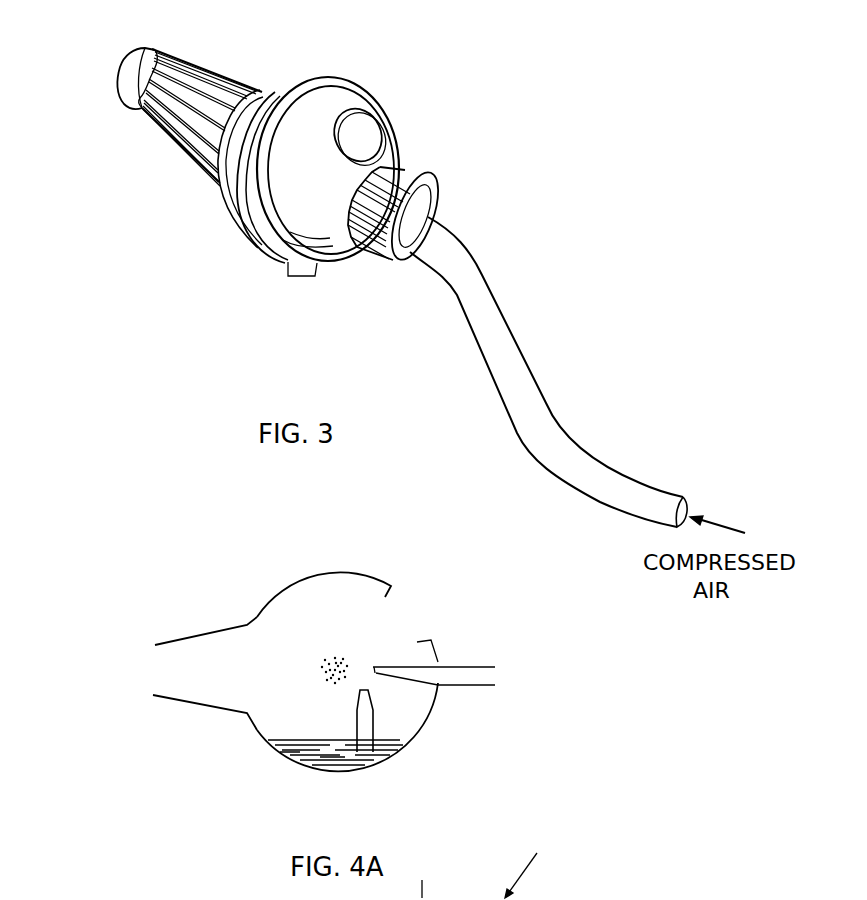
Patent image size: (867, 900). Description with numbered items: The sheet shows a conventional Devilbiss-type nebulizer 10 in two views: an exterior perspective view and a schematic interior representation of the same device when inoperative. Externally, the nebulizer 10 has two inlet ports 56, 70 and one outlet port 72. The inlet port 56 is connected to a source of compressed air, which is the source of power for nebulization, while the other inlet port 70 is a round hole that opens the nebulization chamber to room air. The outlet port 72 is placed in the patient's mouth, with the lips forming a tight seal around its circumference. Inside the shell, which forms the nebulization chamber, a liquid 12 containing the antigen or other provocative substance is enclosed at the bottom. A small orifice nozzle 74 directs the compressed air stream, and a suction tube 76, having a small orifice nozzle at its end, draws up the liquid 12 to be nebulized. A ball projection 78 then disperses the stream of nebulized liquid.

In FIG. 3, the nebulizer 10 is at (220, 192).
In FIG. 4A, the nebulizer 10 is at (257, 732).
In FIG. 4A, the liquid 12 is at (332, 757).
In FIG. 3, the inlet port 56 is at (383, 256).
In FIG. 4A, the inlet port 56 is at (438, 662).
In FIG. 3, the inlet port 70 is at (348, 110).
In FIG. 4A, the inlet port 70 is at (421, 640).
In FIG. 3, the outlet port 72 is at (118, 80).
In FIG. 4A, the outlet port 72 is at (173, 697).
In FIG. 4A, the small orifice nozzle 74 is at (385, 675).
In FIG. 4A, the suction tube 76 is at (360, 683).
In FIG. 4A, the ball projection 78 is at (327, 664).